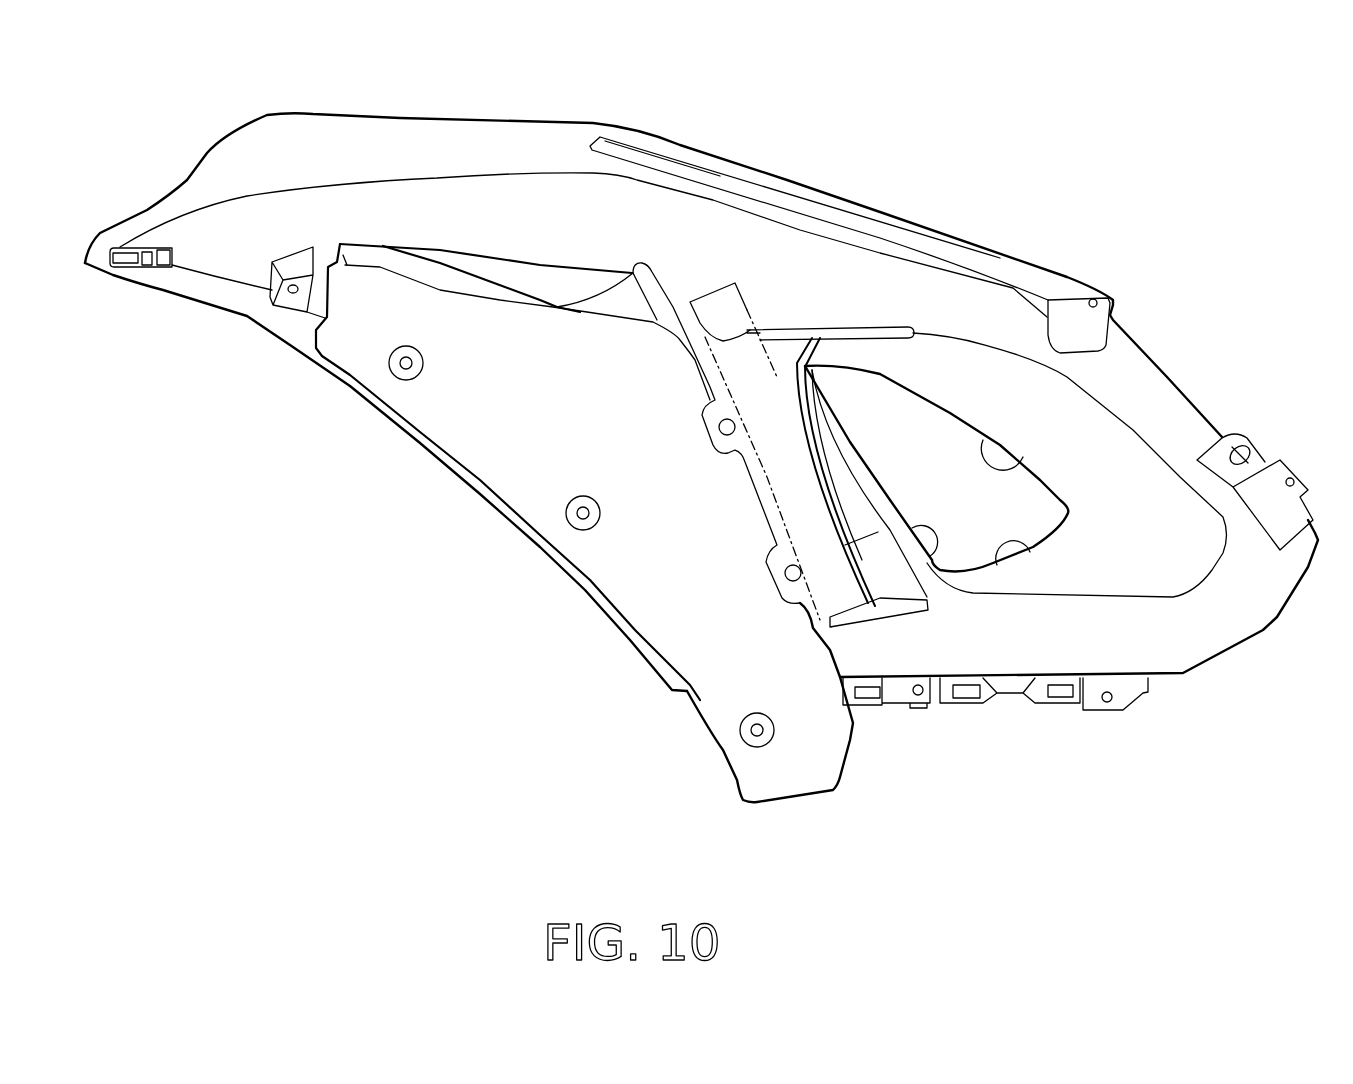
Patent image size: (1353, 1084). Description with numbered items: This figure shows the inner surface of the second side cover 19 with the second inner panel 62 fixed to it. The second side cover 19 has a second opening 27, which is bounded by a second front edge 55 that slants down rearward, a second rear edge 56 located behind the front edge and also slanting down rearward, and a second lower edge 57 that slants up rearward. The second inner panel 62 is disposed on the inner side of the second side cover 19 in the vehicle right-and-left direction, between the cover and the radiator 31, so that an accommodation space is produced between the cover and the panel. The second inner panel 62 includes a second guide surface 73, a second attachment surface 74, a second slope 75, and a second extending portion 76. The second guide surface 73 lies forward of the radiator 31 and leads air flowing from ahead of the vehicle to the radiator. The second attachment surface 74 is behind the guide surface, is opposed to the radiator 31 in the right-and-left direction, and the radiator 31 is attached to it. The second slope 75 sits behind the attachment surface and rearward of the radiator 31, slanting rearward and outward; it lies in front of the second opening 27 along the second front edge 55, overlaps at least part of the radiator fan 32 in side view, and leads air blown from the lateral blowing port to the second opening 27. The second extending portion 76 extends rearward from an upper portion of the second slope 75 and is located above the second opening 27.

The second side cover 19 is at (393, 147).
The second opening 27 is at (1053, 497).
The radiator 31 is at (747, 312).
The radiator fan 32 is at (810, 327).
The second front edge 55 is at (930, 575).
The second rear edge 56 is at (990, 440).
The second lower edge 57 is at (997, 553).
The second inner panel 62 is at (519, 480).
The second guide surface 73 is at (618, 555).
The second attachment surface 74 is at (783, 465).
The second slope 75 is at (888, 577).
The second extending portion 76 is at (858, 327).